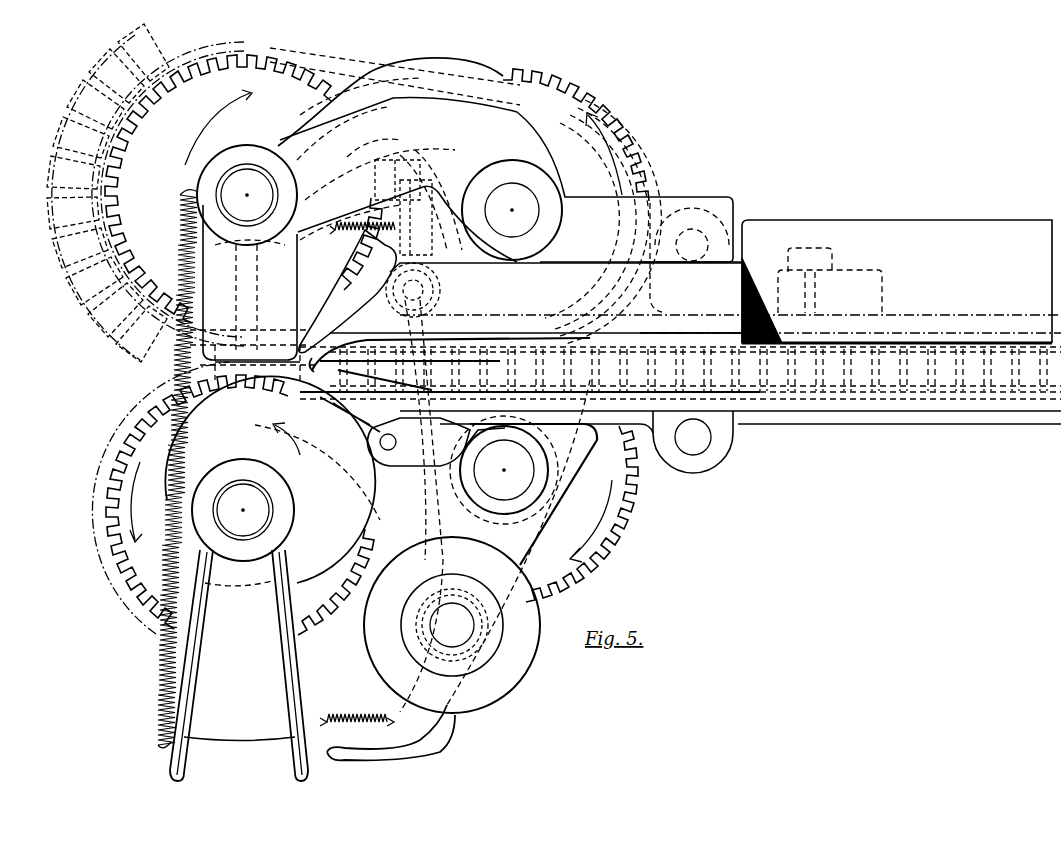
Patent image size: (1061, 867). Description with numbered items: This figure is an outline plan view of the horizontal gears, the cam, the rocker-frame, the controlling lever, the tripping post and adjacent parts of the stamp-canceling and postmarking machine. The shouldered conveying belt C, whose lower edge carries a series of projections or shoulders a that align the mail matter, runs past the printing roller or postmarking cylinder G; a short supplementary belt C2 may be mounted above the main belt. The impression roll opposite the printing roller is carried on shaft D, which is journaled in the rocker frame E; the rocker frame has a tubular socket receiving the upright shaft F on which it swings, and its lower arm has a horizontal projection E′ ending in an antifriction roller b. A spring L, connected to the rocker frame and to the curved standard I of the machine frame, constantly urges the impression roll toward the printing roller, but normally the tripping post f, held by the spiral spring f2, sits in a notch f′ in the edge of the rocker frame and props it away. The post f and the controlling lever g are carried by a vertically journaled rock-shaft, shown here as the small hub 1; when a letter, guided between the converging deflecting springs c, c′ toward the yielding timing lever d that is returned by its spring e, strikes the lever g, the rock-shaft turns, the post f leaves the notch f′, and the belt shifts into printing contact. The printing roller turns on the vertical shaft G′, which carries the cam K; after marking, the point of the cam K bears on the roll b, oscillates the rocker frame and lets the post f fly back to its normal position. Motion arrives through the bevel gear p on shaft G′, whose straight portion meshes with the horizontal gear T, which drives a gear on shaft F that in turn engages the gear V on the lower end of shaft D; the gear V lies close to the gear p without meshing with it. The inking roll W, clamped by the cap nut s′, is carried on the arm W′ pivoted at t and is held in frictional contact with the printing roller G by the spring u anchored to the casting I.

The belt C is at (60, 158).
The supplementary belt C2 is at (372, 64).
The shoulders a is at (554, 211).
The gear V is at (658, 158).
The shaft D is at (243, 189).
The rocker frame E is at (506, 180).
The upright shaft F is at (730, 316).
The horizontal projection E′ is at (466, 282).
The notch f′ is at (405, 177).
The post f is at (433, 230).
The spiral spring f2 is at (362, 242).
The controlling lever g is at (347, 291).
The pivot 1 is at (413, 290).
The antifriction roller b is at (260, 380).
The letter deflecting spring c is at (501, 352).
The letter deflecting spring c′ is at (385, 378).
The timing lever d is at (350, 414).
The spring e is at (436, 442).
The printing roller G is at (95, 520).
The shaft G′ is at (243, 510).
The cam K is at (270, 480).
The curved standard I is at (223, 665).
The spring L is at (169, 469).
The bevel gear p is at (317, 504).
The gear wheel T is at (554, 513).
The pivot t is at (504, 470).
The inking roll W is at (452, 625).
The cap nut s′ is at (452, 625).
The arm W′ is at (458, 530).
The spring u is at (357, 707).